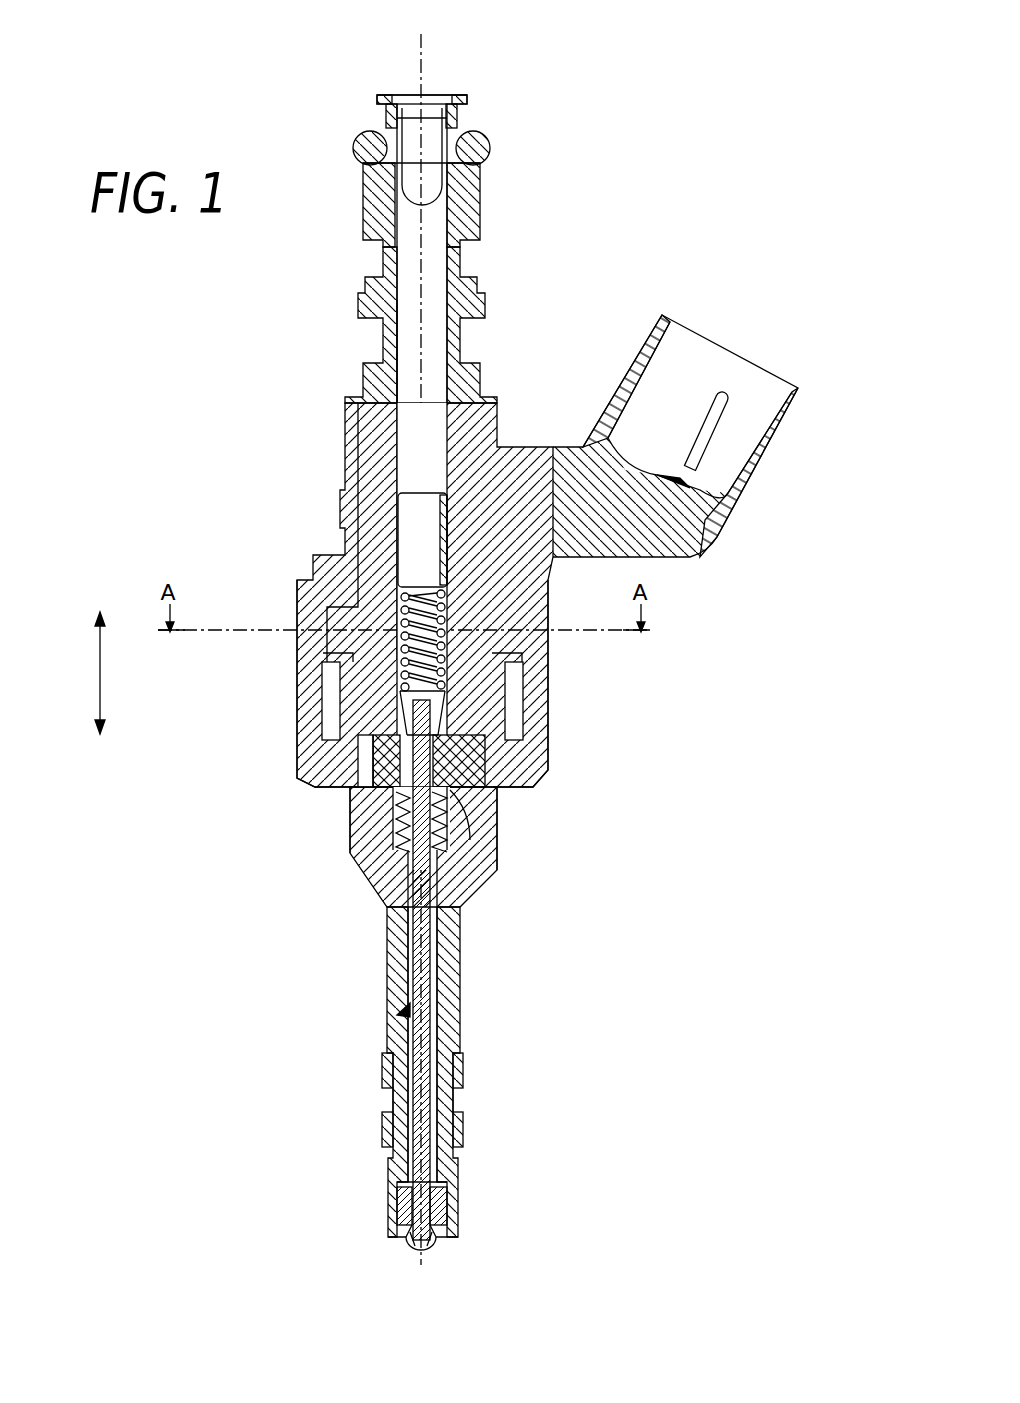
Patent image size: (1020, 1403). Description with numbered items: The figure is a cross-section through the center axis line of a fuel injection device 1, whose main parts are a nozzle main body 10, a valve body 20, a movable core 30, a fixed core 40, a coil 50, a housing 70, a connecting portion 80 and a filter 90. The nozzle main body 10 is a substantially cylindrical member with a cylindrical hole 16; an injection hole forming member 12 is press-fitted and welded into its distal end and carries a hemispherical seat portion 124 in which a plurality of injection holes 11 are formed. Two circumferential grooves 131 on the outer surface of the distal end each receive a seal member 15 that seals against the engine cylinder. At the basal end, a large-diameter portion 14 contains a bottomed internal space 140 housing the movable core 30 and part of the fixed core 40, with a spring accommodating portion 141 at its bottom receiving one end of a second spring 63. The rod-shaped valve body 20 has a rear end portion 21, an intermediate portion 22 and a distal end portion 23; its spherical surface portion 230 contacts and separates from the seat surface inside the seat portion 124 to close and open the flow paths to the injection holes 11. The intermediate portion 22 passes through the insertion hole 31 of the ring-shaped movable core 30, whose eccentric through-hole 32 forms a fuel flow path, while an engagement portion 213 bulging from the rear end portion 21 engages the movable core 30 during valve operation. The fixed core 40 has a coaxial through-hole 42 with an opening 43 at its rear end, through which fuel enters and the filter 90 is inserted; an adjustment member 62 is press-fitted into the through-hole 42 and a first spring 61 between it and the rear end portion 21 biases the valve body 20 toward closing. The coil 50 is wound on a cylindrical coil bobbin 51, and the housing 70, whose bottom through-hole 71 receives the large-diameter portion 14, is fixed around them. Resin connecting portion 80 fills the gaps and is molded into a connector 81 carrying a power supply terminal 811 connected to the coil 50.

The fuel injection device 1 is at (688, 166).
The nozzle main body 10 is at (465, 1000).
The injection hole 11 is at (412, 1245).
The injection hole forming member 12 is at (402, 1240).
The large-diameter portion 14 is at (360, 812).
The seal member 15 is at (462, 1058).
The cylindrical hole 16 is at (410, 975).
The valve body 20 is at (408, 1015).
The rear end portion 21 is at (520, 680).
The intermediate portion 22 is at (395, 905).
The distal end portion 23 is at (421, 1243).
The movable core 30 is at (445, 800).
The insertion hole 31 is at (500, 763).
The eccentric through-hole 32 is at (385, 768).
The fixed core 40 is at (358, 495).
The through-hole 42 is at (410, 300).
The opening 43 is at (432, 96).
The coil 50 is at (345, 705).
The coil bobbin 51 is at (540, 712).
The first spring 61 is at (402, 600).
The adjustment member 62 is at (418, 490).
The second spring 63 is at (375, 842).
The housing 70 is at (550, 720).
The through-hole 71 is at (470, 800).
The connecting portion 80 is at (556, 447).
The connector 81 is at (702, 318).
The power supply terminal 811 is at (720, 398).
The filter 90 is at (407, 96).
The seat portion 124 is at (397, 1200).
The groove 131 is at (462, 1082).
The internal space 140 is at (478, 812).
The spring accommodating portion 141 is at (395, 832).
The engagement portion 213 is at (385, 738).
The spherical surface portion 230 is at (455, 1238).